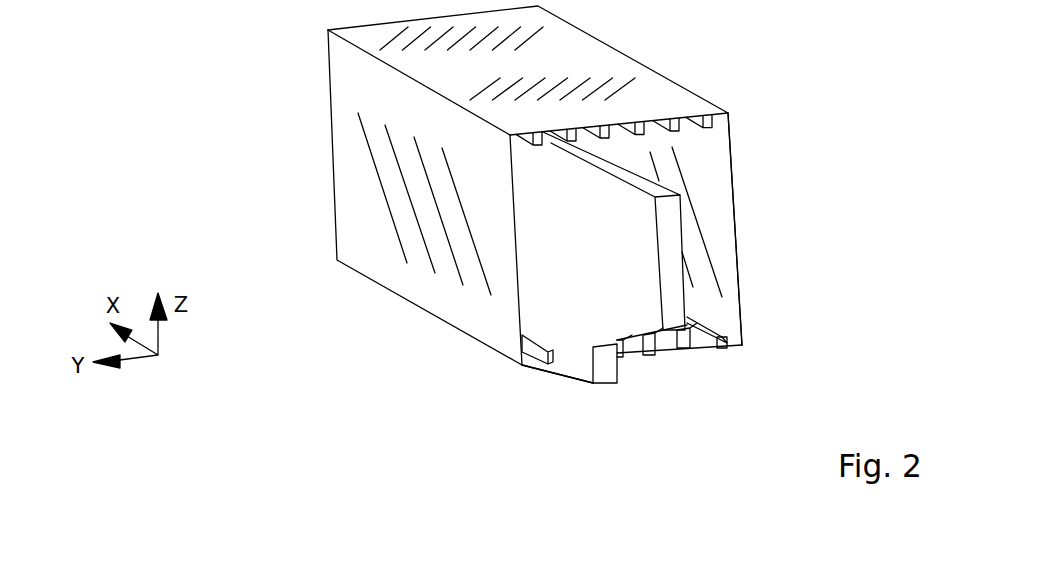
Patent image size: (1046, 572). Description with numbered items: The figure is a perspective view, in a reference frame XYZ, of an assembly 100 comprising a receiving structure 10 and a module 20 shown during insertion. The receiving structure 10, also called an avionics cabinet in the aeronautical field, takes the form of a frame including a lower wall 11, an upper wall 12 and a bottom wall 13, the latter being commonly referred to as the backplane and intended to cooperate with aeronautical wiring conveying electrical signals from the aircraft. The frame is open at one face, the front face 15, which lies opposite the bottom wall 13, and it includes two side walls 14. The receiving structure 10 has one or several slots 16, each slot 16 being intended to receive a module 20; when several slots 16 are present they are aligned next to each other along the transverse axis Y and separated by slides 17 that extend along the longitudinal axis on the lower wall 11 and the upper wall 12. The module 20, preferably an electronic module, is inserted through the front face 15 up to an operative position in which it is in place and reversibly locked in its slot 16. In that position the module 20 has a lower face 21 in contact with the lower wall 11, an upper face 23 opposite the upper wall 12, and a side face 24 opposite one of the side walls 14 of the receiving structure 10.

The assembly 100 is at (132, 115).
The receiving structure 10 is at (267, 131).
The lower wall 11 is at (703, 348).
The upper wall 12 is at (660, 95).
The bottom wall 13 is at (347, 57).
The side wall 14 is at (362, 227).
The front face 15 is at (775, 319).
The slot 16 is at (668, 348).
The slide 17 is at (707, 125).
The module 20 is at (561, 389).
The lower face 21 is at (600, 385).
The upper face 23 is at (638, 180).
The side face 24 is at (570, 275).